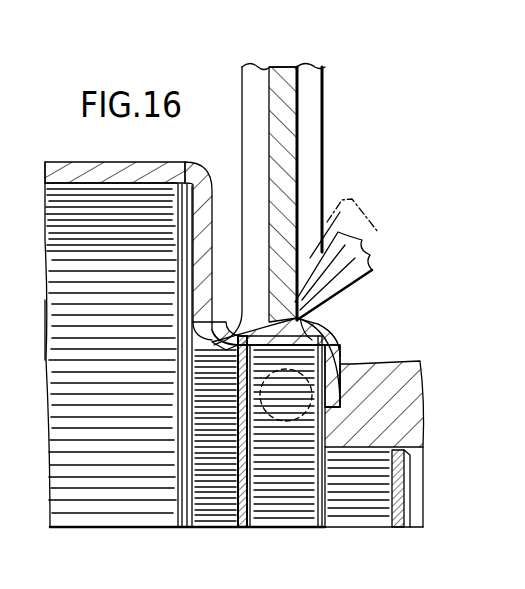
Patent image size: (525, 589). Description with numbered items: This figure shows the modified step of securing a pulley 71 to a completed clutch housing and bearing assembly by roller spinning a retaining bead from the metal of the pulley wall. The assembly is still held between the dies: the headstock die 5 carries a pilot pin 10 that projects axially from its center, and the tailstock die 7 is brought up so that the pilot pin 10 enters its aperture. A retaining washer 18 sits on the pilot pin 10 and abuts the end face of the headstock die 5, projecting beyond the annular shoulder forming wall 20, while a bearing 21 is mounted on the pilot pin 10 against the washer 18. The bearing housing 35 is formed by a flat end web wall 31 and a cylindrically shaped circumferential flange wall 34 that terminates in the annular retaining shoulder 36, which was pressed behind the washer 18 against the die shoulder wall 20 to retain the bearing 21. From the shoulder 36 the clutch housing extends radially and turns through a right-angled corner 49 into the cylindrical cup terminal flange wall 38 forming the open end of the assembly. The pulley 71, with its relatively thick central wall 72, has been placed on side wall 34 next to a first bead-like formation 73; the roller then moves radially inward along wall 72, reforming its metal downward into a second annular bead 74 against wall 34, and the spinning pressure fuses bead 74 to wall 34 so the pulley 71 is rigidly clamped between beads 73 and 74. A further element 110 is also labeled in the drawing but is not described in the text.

The headstock die 5 is at (68, 253).
The tailstock die 7 is at (395, 411).
The pilot pin 10 is at (365, 519).
The retaining washer 18 is at (242, 384).
The annular shoulder forming wall 20 is at (222, 516).
The bearing 21 is at (298, 498).
The flat end web wall 31 is at (332, 362).
The circumferential flange wall 34 is at (244, 386).
The bearing housing 35 is at (348, 331).
The annular retaining shoulder 36 is at (193, 368).
The cylindrical cup terminal flange wall 38 is at (125, 168).
The right-angled corner 49 is at (193, 177).
The pulley 71 is at (241, 94).
The central wall 72 is at (283, 112).
The first bead-like formation 73 is at (262, 319).
The second annular bead-like formation 74 is at (302, 318).
The body 110 is at (0, 420).